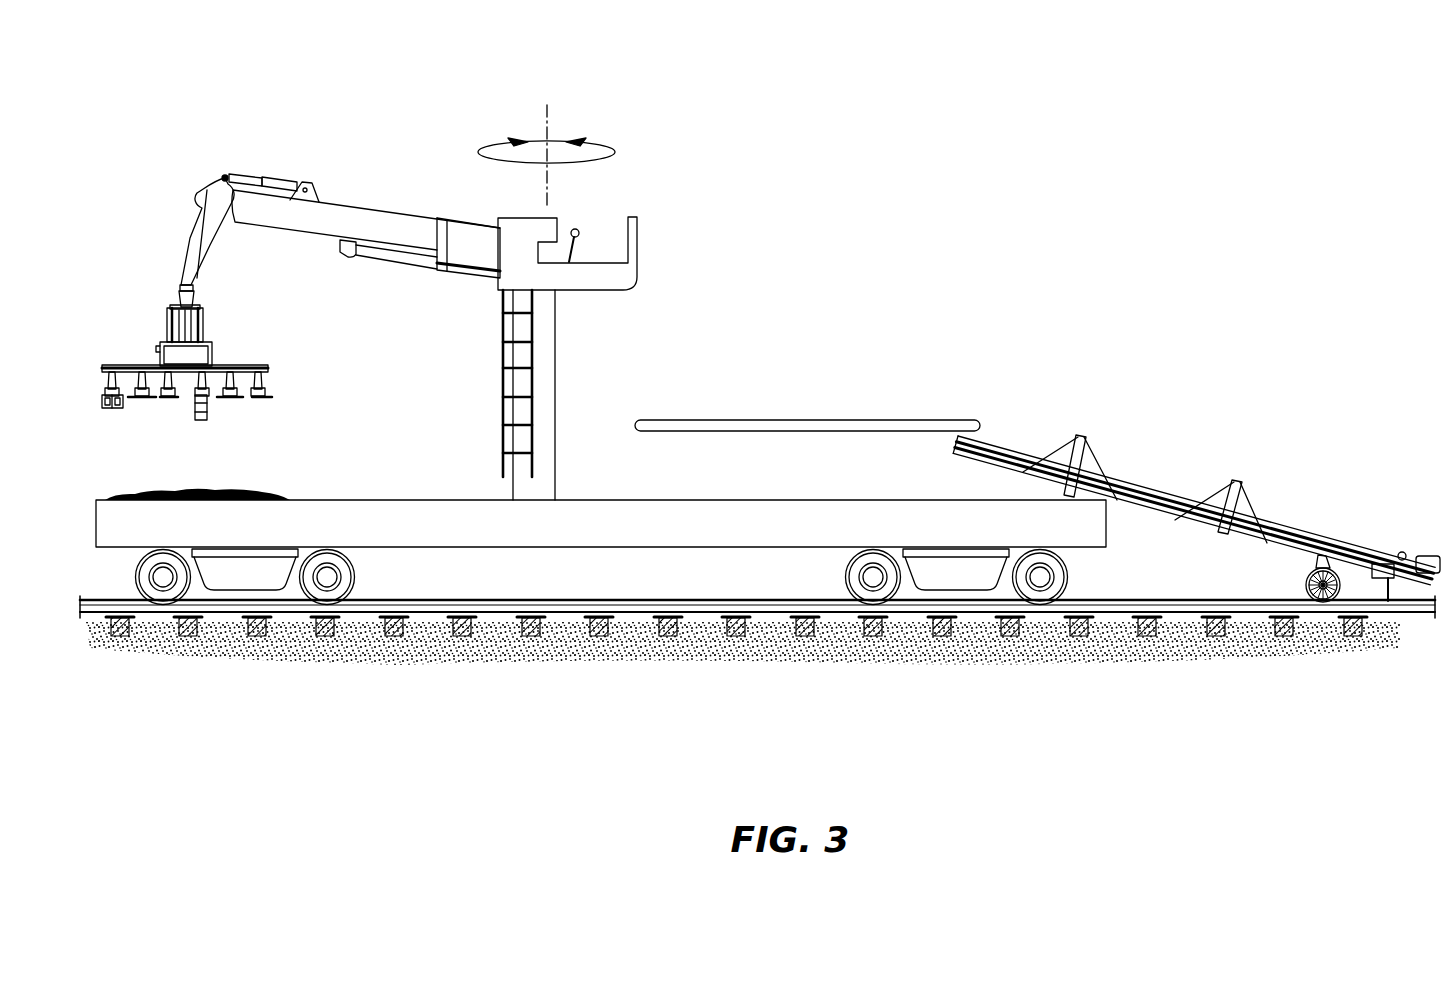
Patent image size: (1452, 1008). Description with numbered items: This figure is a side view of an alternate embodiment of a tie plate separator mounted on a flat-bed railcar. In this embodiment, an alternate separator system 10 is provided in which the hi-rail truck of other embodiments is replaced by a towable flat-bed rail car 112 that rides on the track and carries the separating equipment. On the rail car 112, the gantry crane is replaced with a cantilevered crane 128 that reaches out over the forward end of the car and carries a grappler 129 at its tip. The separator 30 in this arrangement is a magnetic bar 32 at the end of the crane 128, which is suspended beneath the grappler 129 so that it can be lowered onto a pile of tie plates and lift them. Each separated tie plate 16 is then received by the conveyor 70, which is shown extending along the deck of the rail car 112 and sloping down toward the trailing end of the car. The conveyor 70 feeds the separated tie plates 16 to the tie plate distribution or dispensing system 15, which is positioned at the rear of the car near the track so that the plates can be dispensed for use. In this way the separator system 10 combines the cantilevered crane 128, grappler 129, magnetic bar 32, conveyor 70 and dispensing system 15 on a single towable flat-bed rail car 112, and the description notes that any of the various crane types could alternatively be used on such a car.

The separator system 10 is at (831, 151).
The tie plate dispensing system 15 is at (1284, 447).
The tie plate 16 is at (170, 398).
The separator 30 is at (87, 340).
The magnetic bar 32 is at (267, 365).
The conveyor 70 is at (929, 389).
The towable flat-bed rail car 112 is at (350, 358).
The cantilevered crane 128 is at (341, 153).
The grappler 129 is at (149, 280).